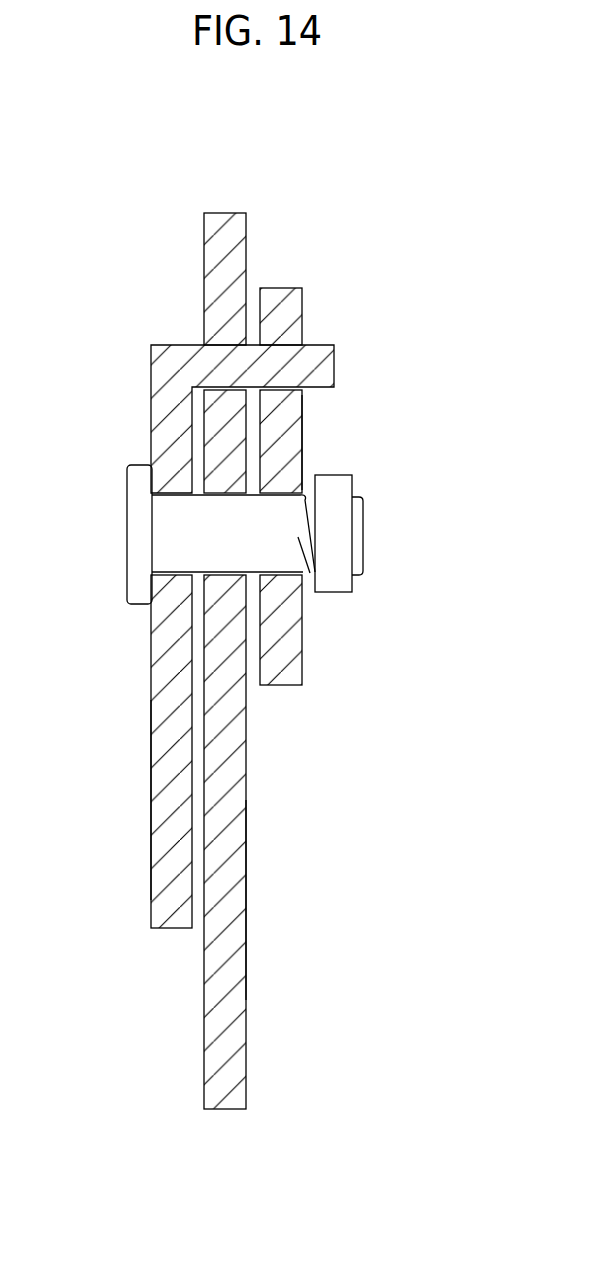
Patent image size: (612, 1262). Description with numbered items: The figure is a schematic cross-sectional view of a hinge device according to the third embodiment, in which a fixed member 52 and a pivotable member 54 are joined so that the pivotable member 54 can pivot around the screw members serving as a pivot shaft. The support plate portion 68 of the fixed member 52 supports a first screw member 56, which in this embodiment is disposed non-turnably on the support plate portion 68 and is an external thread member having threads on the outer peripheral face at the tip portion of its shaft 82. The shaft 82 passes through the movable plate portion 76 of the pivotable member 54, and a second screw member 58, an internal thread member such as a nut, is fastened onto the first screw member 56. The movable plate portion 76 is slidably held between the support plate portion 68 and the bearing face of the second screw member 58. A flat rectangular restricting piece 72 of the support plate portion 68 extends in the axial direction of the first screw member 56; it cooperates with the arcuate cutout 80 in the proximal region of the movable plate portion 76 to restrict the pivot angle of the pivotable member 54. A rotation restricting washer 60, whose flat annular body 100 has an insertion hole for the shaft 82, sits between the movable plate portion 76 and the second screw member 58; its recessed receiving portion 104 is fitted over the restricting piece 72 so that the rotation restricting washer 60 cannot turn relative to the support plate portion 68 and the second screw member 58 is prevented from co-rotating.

The fixed member 52 is at (149, 697).
The pivotable member 54 is at (256, 876).
The first screw member 56 is at (140, 560).
The second screw member 58 is at (338, 489).
The rotation restricting washer 60 is at (313, 416).
The support plate portion 68 is at (160, 802).
The restricting piece 72 is at (312, 370).
The movable plate portion 76 is at (244, 775).
The cutout 80 is at (226, 340).
The shaft 82 is at (272, 556).
The body 100 is at (287, 468).
The receiving portion 104 is at (287, 322).